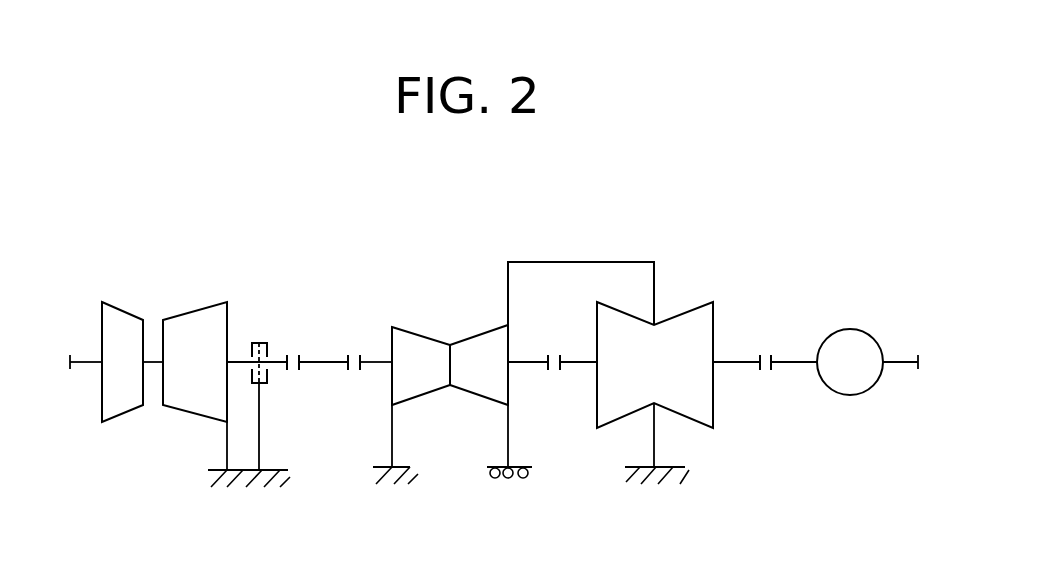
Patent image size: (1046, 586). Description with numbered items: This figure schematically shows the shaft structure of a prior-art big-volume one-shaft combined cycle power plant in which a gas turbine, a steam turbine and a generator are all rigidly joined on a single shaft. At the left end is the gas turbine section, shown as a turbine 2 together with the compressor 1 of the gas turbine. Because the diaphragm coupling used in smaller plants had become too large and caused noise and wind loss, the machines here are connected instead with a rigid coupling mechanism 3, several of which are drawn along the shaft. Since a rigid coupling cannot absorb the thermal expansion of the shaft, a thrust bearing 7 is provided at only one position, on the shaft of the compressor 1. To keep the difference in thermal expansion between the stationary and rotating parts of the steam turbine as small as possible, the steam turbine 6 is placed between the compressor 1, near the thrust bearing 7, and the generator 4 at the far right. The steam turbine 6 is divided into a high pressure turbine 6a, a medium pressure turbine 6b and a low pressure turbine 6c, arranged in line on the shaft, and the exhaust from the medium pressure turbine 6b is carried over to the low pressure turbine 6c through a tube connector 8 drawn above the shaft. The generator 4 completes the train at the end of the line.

The compressor 1 is at (222, 302).
The gas turbine (GT) 2 is at (128, 310).
The rigid coupling mechanism 3 is at (290, 354).
The generator 4 is at (853, 328).
The steam turbine 6 is at (551, 335).
The high pressure turbine 6a is at (410, 332).
The medium pressure turbine 6b is at (466, 340).
The low-pressure turbine (LP) 6c is at (700, 302).
The thrust bearing 7 is at (258, 341).
The tube connector 8 is at (617, 261).